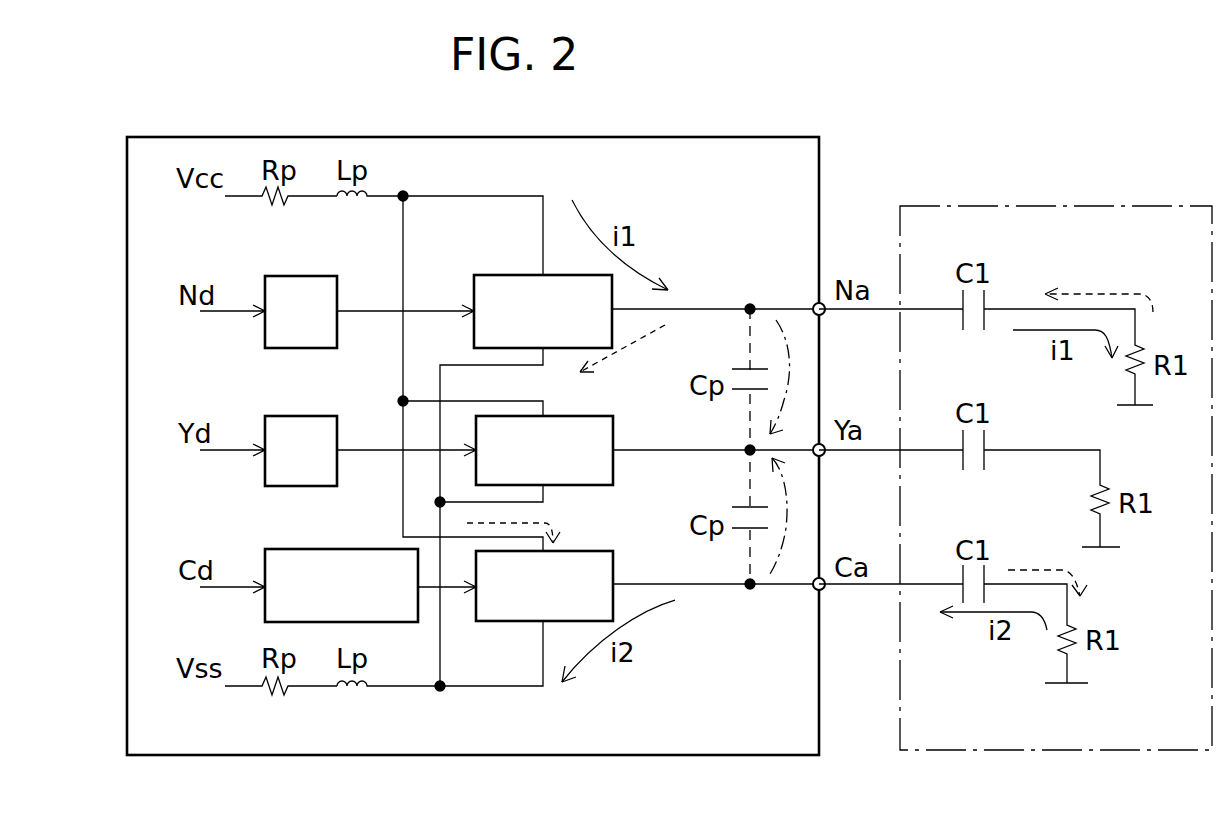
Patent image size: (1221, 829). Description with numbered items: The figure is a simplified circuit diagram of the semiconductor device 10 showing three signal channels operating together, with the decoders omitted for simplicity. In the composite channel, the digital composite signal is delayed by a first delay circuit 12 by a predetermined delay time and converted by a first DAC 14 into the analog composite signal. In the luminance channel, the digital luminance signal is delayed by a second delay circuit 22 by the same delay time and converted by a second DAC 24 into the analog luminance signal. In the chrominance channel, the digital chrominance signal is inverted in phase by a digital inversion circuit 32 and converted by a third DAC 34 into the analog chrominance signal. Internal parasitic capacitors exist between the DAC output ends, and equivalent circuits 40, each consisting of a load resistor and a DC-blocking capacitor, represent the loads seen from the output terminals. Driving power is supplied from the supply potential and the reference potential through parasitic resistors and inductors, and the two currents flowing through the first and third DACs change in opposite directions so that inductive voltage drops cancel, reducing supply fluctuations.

The semiconductor device 10 is at (725, 136).
The first delay circuit 12 is at (320, 276).
The first DAC 14 is at (496, 276).
The second delay circuit 22 is at (320, 416).
The second DAC 24 is at (570, 412).
The digital inversion circuit 32 is at (320, 549).
The third DAC 34 is at (570, 550).
The equivalent circuit 40 is at (1168, 205).